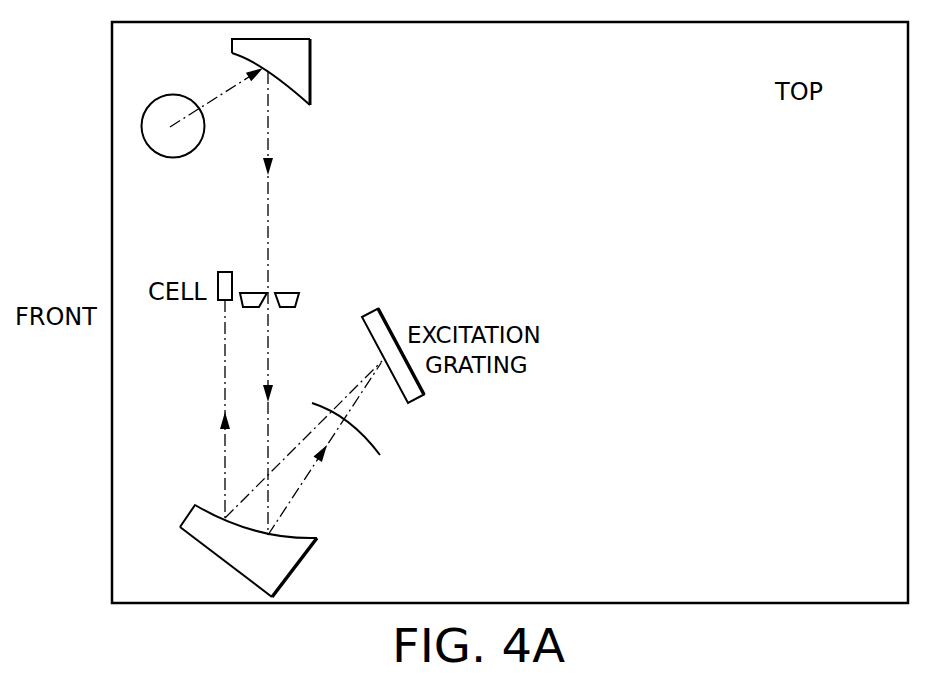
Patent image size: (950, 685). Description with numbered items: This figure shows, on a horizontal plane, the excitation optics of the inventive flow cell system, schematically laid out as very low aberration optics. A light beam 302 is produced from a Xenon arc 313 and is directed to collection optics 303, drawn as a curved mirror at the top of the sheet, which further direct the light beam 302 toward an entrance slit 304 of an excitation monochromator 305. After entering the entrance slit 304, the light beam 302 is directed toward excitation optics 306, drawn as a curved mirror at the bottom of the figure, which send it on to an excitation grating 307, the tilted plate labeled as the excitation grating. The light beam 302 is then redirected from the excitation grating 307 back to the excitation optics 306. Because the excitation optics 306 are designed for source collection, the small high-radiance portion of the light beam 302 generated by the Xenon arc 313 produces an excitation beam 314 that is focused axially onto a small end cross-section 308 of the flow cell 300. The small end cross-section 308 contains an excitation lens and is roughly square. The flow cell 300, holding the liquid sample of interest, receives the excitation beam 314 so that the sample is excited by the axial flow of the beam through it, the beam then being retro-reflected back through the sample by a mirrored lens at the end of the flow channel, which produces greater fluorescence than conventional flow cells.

The flow cell 300 is at (224, 272).
The light beam 302 is at (213, 97).
The collection optics 303 is at (311, 64).
The entrance slit 304 is at (288, 293).
The excitation monochromator 305 is at (380, 455).
The excitation optics 306 is at (190, 506).
The excitation grating 307 is at (383, 308).
The small end cross-section 308 is at (221, 301).
The Xenon arc 313 is at (176, 157).
The excitation beam 314 is at (223, 394).